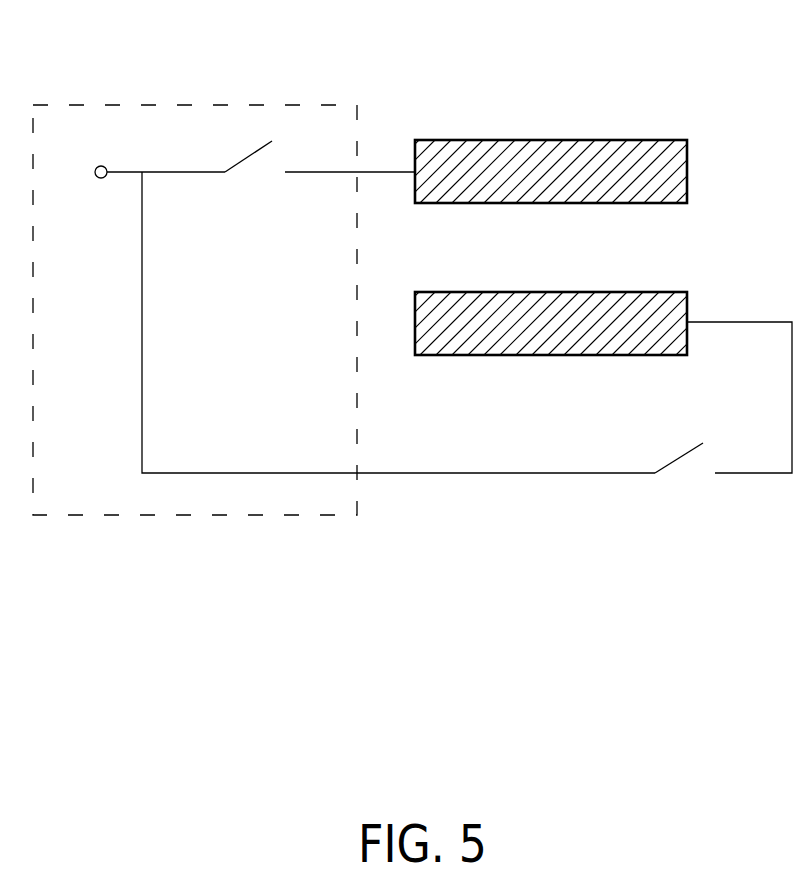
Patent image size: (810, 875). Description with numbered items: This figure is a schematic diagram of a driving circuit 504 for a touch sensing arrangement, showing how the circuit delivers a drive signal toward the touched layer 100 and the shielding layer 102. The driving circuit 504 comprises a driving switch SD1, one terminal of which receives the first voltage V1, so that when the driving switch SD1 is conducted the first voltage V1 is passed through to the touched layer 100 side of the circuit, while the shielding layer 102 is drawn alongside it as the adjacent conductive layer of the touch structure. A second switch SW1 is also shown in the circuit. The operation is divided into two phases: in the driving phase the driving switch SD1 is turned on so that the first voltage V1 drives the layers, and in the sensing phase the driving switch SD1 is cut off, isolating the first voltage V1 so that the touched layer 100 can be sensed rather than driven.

The driving circuit 504 is at (233, 105).
The touched layer 100 is at (637, 140).
The shielding layer 102 is at (637, 292).
The first voltage V1 is at (79, 172).
The driving switch SD1 is at (253, 180).
The second switch SW1 is at (684, 479).